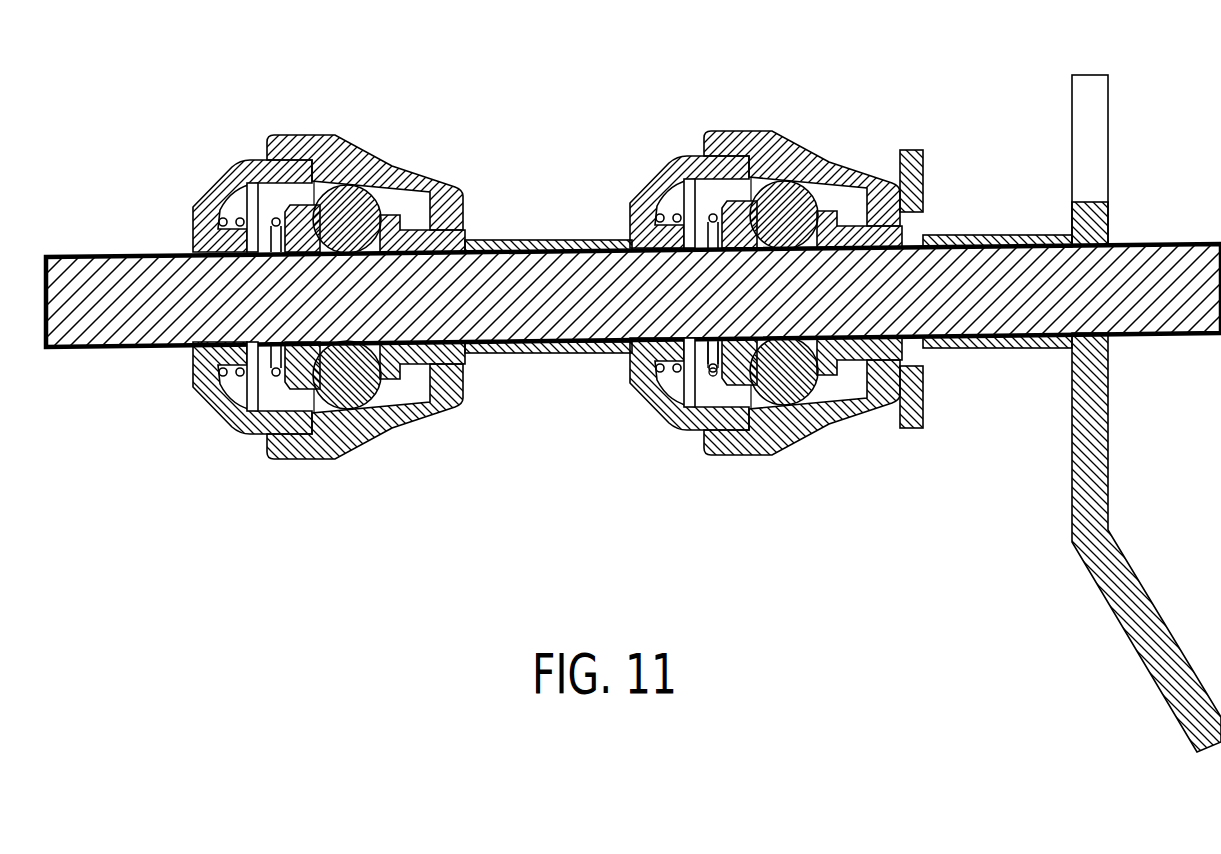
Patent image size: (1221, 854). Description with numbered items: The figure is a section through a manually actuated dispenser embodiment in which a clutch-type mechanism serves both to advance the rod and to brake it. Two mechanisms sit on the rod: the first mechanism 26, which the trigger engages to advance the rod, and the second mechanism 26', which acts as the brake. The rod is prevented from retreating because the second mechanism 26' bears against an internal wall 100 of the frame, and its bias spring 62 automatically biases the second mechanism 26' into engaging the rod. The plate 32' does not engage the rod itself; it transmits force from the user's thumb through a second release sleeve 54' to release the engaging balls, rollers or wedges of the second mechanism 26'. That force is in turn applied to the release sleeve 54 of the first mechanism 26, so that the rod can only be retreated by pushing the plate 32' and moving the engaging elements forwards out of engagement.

The first mechanism 26 is at (329, 255).
The second mechanism 26' is at (766, 259).
The release sleeve 54 is at (548, 248).
The second release sleeve 54' is at (997, 341).
The internal wall 100 is at (923, 170).
The plate 32' is at (1146, 413).
The bias spring 62 is at (697, 386).